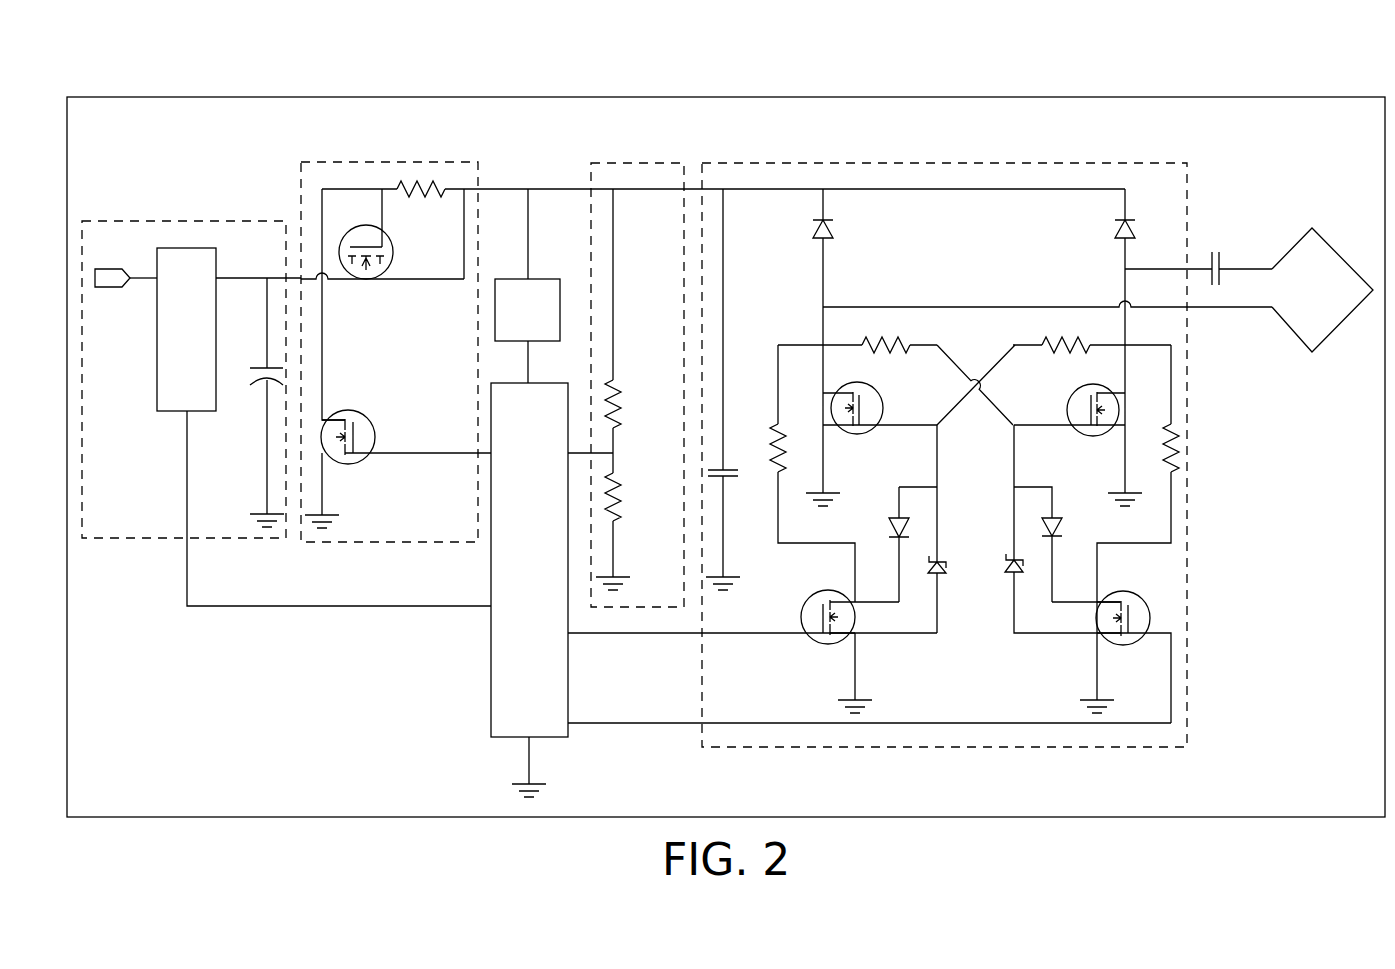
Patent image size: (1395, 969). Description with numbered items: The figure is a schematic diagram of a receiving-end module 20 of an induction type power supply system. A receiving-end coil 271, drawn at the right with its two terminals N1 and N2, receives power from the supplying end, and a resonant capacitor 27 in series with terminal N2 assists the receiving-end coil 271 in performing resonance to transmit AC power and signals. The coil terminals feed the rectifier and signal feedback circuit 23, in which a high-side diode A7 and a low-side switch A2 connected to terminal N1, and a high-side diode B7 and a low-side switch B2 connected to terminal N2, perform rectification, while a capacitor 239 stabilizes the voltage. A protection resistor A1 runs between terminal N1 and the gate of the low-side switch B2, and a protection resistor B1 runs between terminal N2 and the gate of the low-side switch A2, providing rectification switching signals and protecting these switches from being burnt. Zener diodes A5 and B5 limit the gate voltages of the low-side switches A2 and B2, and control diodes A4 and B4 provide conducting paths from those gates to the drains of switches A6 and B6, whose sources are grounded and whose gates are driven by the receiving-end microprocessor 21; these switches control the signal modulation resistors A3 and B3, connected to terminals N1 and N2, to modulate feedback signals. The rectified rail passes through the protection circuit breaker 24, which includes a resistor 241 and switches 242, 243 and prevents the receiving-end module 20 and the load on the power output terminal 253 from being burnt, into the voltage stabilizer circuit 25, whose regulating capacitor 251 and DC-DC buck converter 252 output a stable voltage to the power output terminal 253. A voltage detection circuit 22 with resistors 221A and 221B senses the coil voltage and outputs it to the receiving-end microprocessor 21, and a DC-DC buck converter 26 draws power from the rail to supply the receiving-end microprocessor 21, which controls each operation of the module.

The receiving-end module 20 is at (1265, 76).
The receiving-end microprocessor 21 is at (542, 575).
The voltage detection circuit 22 is at (645, 163).
The rectifier and signal feedback circuit 23 is at (803, 163).
The protection circuit breaker 24 is at (372, 162).
The voltage stabilizer circuit 25 is at (181, 221).
The DC-DC buck converter 26 is at (542, 325).
The resonant capacitor 27 is at (1212, 252).
The capacitor 239 is at (740, 478).
The resistor 241 is at (428, 200).
The switch 242 is at (362, 282).
The switch 243 is at (355, 410).
The regulating capacitor 251 is at (256, 365).
The DC-DC buck converter 252 is at (207, 346).
The power output terminal 253 is at (110, 290).
The resistor 221A is at (648, 379).
The resistor 221B is at (648, 475).
The receiving-end coil 271 is at (1292, 248).
The protection resistor A1 is at (896, 381).
The low-side switch A2 is at (871, 444).
The signal modulation resistor A3 is at (812, 473).
The control diode A4 is at (896, 544).
The zener diode A5 is at (926, 529).
The switch A6 is at (828, 641).
The high-side diode A7 is at (843, 291).
The protection resistor B1 is at (1092, 360).
The low-side switch B2 is at (1078, 445).
The signal modulation resistor B3 is at (1129, 529).
The control diode B4 is at (1067, 544).
The zener diode B5 is at (1088, 574).
The switch B6 is at (1133, 607).
The high-side diode B7 is at (1106, 291).
The terminal N1 is at (1047, 320).
The terminal N2 is at (1198, 254).